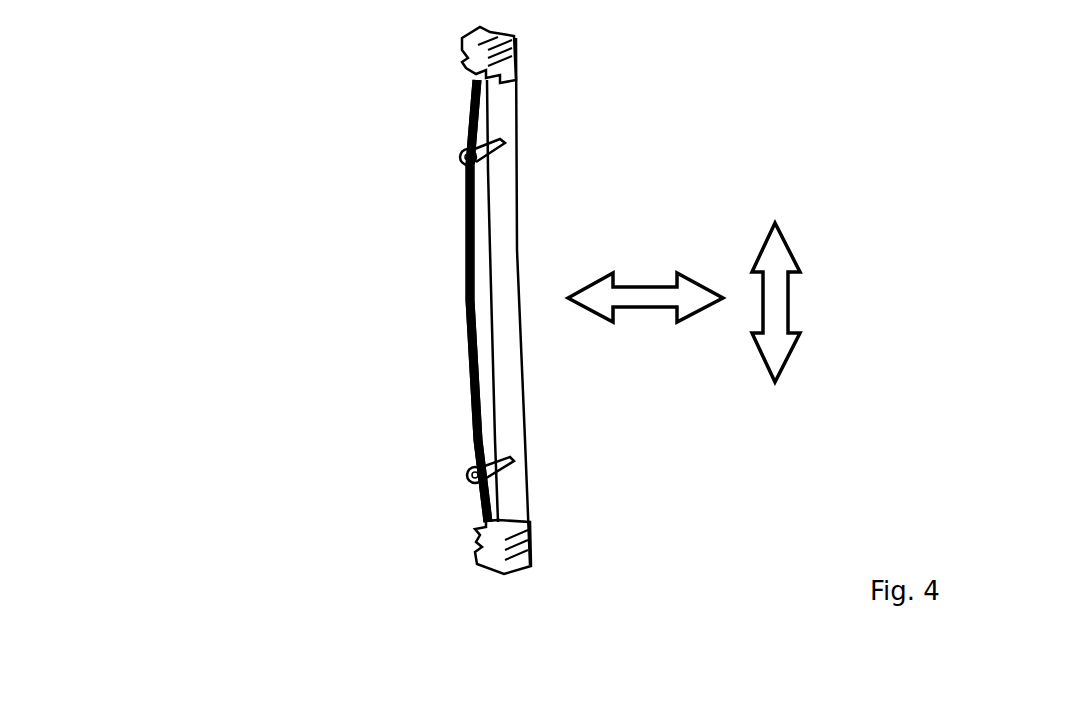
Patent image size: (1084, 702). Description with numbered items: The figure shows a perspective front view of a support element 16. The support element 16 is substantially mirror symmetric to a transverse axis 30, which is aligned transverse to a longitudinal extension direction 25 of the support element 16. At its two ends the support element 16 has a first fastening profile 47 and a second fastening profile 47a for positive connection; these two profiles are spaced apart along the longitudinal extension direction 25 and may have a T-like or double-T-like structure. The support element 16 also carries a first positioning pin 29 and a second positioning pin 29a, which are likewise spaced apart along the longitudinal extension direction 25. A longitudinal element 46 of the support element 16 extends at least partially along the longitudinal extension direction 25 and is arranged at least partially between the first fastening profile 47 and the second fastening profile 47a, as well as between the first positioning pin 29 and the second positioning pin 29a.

The support element 16 is at (165, 108).
The longitudinal element 46 is at (485, 252).
The first fastening profile 47 is at (445, 68).
The second fastening profile 47a is at (470, 548).
The first positioning pin 29 is at (458, 162).
The second positioning pin 29a is at (465, 468).
The transverse axis 30 is at (655, 300).
The longitudinal extension direction 25 is at (775, 262).